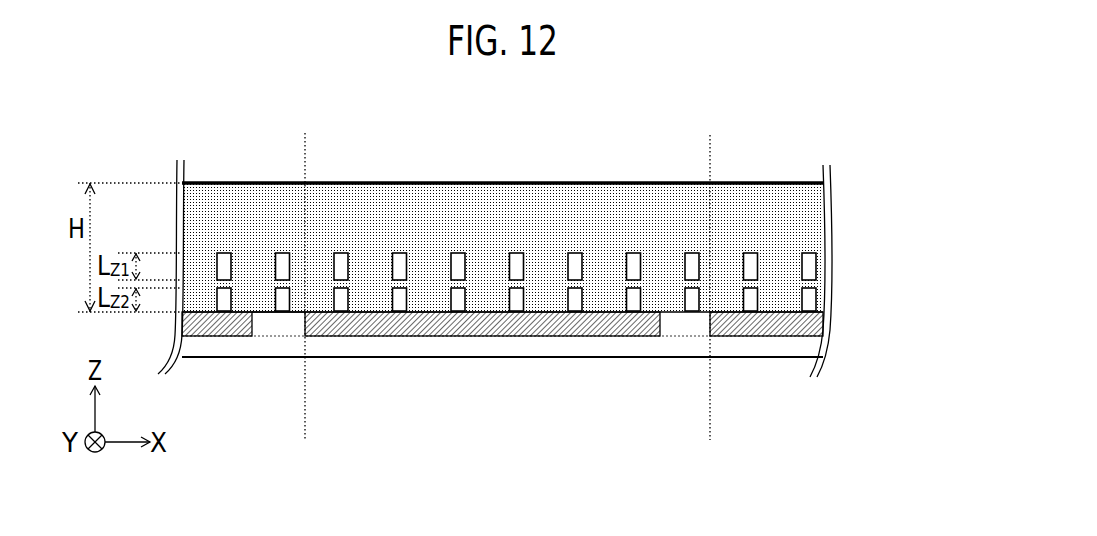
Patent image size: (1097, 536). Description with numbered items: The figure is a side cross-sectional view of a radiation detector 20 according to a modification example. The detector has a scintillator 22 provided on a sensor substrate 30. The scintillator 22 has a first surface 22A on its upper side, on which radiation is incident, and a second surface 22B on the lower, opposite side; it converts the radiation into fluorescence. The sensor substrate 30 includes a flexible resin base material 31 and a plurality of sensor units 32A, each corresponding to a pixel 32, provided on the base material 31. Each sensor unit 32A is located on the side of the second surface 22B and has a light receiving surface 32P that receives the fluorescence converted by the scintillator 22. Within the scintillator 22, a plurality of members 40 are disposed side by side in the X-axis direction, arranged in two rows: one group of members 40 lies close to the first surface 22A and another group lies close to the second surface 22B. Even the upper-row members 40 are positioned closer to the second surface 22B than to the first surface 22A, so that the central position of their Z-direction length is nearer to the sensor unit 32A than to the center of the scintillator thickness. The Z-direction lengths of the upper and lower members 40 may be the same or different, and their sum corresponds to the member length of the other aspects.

The radiation detector 20 is at (753, 124).
The scintillator 22 is at (763, 208).
The first surface 22A is at (270, 181).
The second surface 22B is at (265, 315).
The member 40 is at (223, 265).
The light receiving surface 32P is at (430, 308).
The sensor unit 32A is at (818, 319).
The base material 31 is at (815, 348).
The sensor substrate 30 is at (898, 305).
The pixel 32 is at (305, 410).